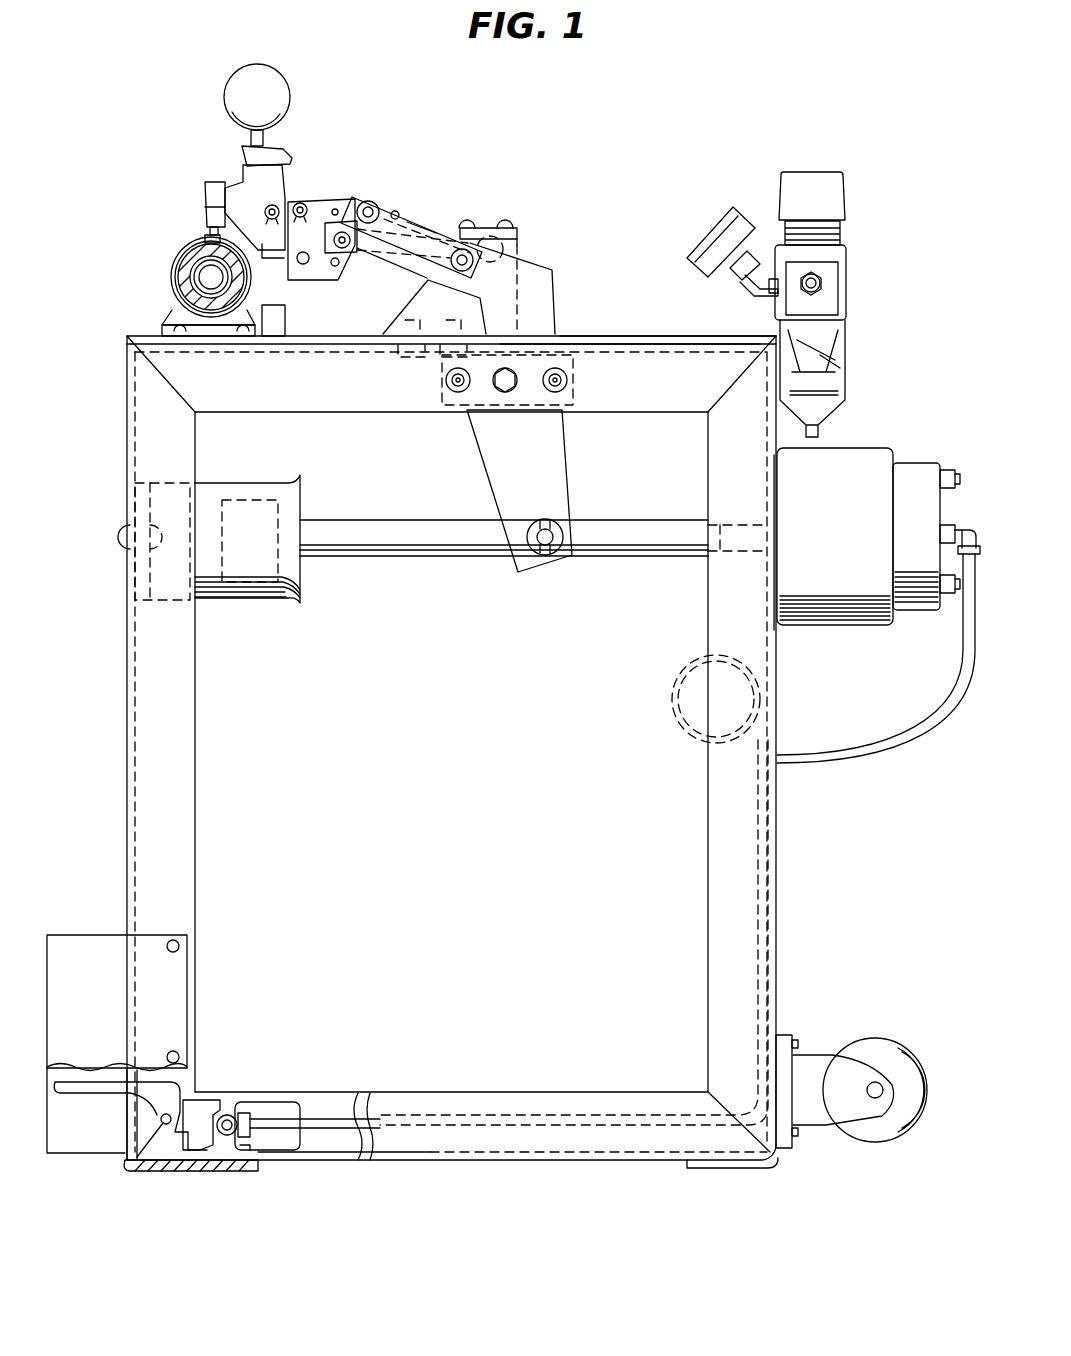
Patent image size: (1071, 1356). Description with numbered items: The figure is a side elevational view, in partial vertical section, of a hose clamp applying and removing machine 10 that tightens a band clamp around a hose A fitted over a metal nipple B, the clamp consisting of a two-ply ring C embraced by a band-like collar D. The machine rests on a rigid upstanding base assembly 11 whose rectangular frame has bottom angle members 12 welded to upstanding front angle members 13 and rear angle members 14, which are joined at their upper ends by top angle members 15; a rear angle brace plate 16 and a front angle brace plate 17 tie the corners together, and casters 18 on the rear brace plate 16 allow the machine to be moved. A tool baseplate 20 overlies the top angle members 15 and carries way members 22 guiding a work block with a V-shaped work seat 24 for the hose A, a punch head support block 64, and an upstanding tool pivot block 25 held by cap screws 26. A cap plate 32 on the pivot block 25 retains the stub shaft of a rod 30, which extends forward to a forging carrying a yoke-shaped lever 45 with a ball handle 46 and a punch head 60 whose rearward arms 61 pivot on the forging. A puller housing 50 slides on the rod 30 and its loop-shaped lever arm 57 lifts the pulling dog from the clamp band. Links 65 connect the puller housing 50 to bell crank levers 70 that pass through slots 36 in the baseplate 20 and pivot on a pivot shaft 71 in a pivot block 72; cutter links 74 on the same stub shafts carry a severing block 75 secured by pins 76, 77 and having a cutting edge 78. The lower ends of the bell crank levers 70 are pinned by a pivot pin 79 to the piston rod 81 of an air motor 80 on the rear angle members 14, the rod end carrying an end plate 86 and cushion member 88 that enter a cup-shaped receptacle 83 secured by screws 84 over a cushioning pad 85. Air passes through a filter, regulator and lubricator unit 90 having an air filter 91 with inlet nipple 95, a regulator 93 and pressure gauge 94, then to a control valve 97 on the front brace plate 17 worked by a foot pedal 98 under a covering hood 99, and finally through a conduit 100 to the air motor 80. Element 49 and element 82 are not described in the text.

The hose clamp applying and removing machine 10 is at (574, 124).
The base assembly 11 is at (800, 888).
The bottom angle members 12 is at (398, 1100).
The front angle members 13 is at (187, 858).
The rear angle members 14 is at (722, 850).
The top angle members 15 is at (378, 402).
The rear angle brace plate 16 is at (772, 1170).
The front angle brace plate 17 is at (150, 1174).
The casters 18 is at (818, 1053).
The tool baseplate 20 is at (660, 336).
The way members 22 is at (162, 330).
The work seat 24 is at (176, 313).
The tool pivot block 25 is at (418, 305).
The cap screws 26 is at (410, 356).
The rod 30 is at (373, 256).
The cap plate 32 is at (500, 226).
The slots 36 is at (620, 340).
The lever 45 is at (276, 186).
The ball handle 46 is at (246, 80).
The handle head 49 is at (282, 155).
The puller housing 50 is at (322, 275).
The loop-shaped lever arm 57 is at (352, 190).
The punch head 60 is at (208, 194).
The arms 61 is at (270, 256).
The punch head support block 64 is at (287, 322).
The links 65 is at (402, 258).
The bell crank levers 70 is at (500, 468).
The pivot shaft 71 is at (508, 395).
The pivot block 72 is at (576, 382).
The cutter links 74 is at (436, 234).
The severing block 75 is at (410, 212).
The pin 76 is at (368, 202).
The pin 77 is at (395, 210).
The cutting edge 78 is at (418, 222).
The pivot pin 79 is at (550, 548).
The air motor 80 is at (872, 452).
The piston rod 81 is at (648, 522).
The motor mounting plate 82 is at (772, 472).
The receptacle 83 is at (266, 483).
The screws 84 is at (118, 538).
The cushioning pad 85 is at (138, 487).
The end plate 86 is at (284, 600).
The cushion member 88 is at (252, 598).
The filter, regulator and lubricator unit 90 is at (802, 297).
The air filter 91 is at (840, 378).
The regulator 93 is at (838, 200).
The pressure gauge 94 is at (728, 210).
The inlet nipple 95 is at (822, 286).
The control valve 97 is at (268, 1100).
The foot pedal 98 is at (92, 1100).
The covering hood 99 is at (88, 938).
The conduit 100 is at (912, 738).
The hose A is at (186, 276).
The nipple B is at (178, 268).
The ring C is at (182, 253).
The collar D is at (205, 236).